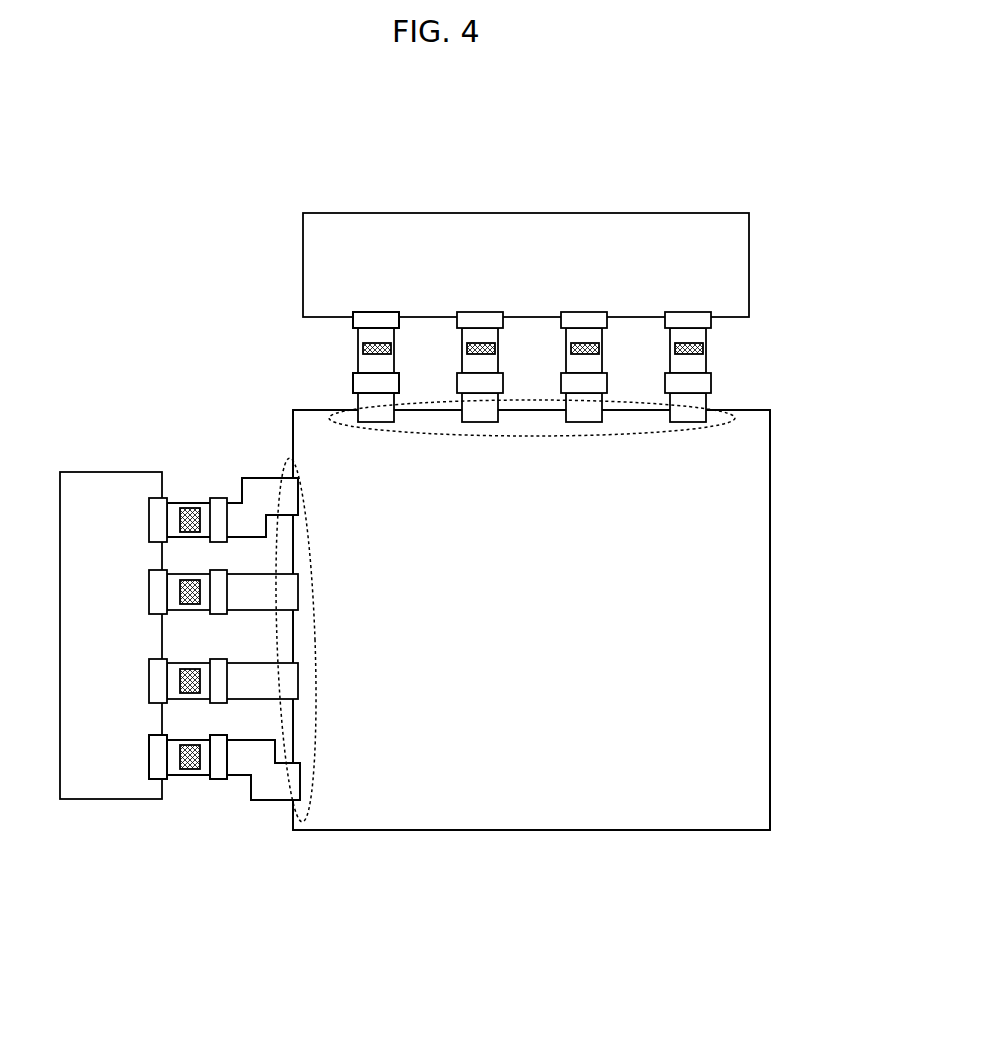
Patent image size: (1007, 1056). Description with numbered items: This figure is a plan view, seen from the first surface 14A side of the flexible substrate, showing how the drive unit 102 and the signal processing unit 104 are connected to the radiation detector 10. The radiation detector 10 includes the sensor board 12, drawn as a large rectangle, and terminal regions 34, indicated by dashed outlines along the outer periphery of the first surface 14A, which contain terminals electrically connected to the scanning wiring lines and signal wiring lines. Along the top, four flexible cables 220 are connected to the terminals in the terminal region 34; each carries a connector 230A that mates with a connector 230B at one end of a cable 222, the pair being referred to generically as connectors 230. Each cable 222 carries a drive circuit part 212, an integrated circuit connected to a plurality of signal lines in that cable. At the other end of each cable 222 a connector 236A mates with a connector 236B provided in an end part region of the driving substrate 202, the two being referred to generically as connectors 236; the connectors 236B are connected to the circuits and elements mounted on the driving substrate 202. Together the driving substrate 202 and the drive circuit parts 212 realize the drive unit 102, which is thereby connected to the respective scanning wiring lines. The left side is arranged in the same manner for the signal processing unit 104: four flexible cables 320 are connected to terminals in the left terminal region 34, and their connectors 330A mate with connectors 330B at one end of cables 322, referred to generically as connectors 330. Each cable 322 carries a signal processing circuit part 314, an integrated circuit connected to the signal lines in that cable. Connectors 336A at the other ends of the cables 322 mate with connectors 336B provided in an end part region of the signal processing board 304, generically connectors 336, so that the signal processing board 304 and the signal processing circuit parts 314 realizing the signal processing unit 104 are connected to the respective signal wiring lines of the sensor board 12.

The radiation detector 10 is at (750, 785).
The sensor board 12 is at (755, 694).
The first surface 14A is at (755, 578).
The terminal region 34 is at (735, 415).
The drive unit 102 is at (541, 317).
The signal processing unit 104 is at (173, 639).
The driving substrate 202 is at (745, 283).
The drive circuit part 212 is at (700, 346).
The cable 220 is at (693, 399).
The cable 222 is at (705, 361).
The connector 230 is at (353, 386).
The connector 230A is at (307, 391).
The connector 230B is at (264, 412).
The connector 236 is at (353, 320).
The connector 236A is at (304, 331).
The connector 236B is at (258, 352).
The signal processing board 304 is at (110, 473).
The signal processing circuit part 314 is at (182, 508).
The cable 320 is at (280, 497).
The cable 322 is at (204, 506).
The connector 330 is at (219, 780).
The connector 330A is at (252, 812).
The connector 330B is at (287, 861).
The connector 336 is at (153, 779).
The connector 336A is at (140, 812).
The connector 336B is at (163, 864).